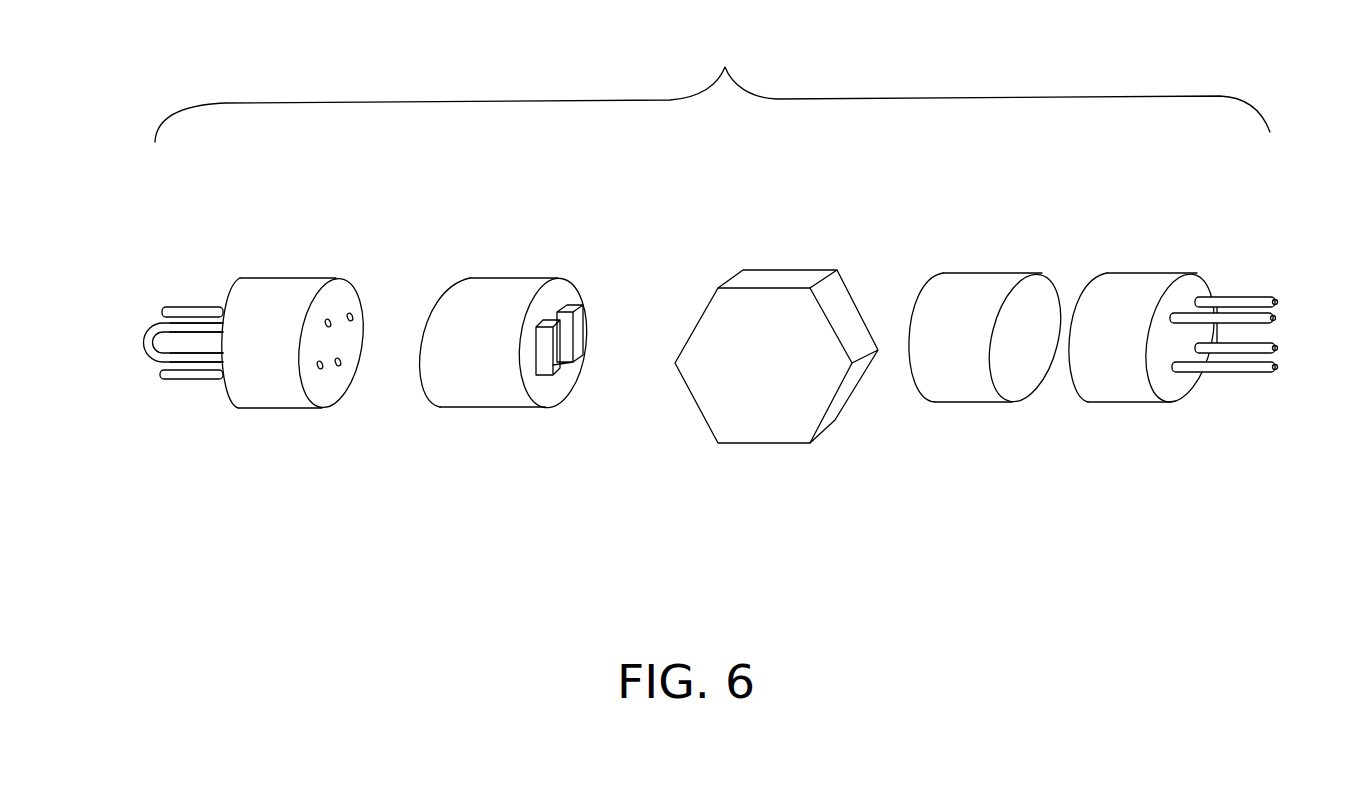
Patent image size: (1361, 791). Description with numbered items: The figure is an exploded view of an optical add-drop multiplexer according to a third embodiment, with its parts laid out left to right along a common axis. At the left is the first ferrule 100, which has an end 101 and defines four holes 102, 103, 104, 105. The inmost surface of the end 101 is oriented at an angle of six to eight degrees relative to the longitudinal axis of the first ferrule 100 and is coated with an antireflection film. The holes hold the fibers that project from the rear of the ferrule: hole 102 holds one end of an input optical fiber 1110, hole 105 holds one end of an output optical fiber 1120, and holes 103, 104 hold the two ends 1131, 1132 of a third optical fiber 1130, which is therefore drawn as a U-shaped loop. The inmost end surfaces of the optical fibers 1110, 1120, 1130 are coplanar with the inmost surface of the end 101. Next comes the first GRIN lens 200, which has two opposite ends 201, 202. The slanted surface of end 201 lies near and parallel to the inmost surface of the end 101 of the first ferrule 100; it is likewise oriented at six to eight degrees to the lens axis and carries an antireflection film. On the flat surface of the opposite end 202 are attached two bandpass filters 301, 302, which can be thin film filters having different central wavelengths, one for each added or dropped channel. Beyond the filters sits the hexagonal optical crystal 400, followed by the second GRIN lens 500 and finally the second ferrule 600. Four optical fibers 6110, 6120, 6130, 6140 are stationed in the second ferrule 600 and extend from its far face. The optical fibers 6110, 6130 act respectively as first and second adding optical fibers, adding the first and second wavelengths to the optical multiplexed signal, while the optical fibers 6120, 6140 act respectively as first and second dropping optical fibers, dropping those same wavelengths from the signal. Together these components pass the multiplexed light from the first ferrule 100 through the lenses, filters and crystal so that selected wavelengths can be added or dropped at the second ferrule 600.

The first ferrule 100 is at (285, 307).
The end 101 is at (342, 295).
The hole 102 is at (325, 327).
The hole 103 is at (318, 368).
The hole 104 is at (353, 318).
The hole 105 is at (342, 363).
The input optical fiber 1110 is at (177, 310).
The output optical fiber 1120 is at (177, 375).
The third optical fiber 1130 is at (147, 345).
The end of third optical fiber 1131 is at (208, 358).
The end of third optical fiber 1132 is at (198, 327).
The first GRIN lens 200 is at (482, 382).
The end 201 is at (448, 293).
The end 202 is at (553, 292).
The bandpass filter 301 is at (557, 342).
The bandpass filter 302 is at (578, 325).
The optical crystal 400 is at (748, 305).
The second GRIN lens 500 is at (977, 368).
The second ferrule 600 is at (1122, 290).
The optical fiber 6110 is at (1205, 321).
The optical fiber 6120 is at (1253, 367).
The optical fiber 6130 is at (1247, 303).
The optical fiber 6140 is at (1223, 350).